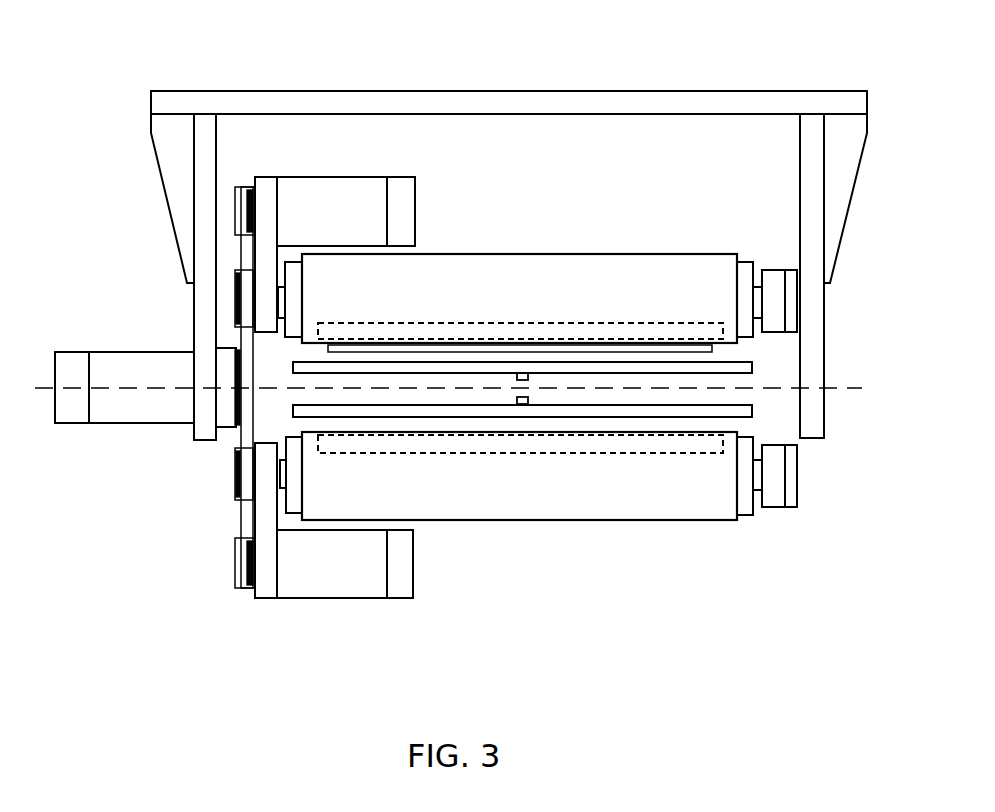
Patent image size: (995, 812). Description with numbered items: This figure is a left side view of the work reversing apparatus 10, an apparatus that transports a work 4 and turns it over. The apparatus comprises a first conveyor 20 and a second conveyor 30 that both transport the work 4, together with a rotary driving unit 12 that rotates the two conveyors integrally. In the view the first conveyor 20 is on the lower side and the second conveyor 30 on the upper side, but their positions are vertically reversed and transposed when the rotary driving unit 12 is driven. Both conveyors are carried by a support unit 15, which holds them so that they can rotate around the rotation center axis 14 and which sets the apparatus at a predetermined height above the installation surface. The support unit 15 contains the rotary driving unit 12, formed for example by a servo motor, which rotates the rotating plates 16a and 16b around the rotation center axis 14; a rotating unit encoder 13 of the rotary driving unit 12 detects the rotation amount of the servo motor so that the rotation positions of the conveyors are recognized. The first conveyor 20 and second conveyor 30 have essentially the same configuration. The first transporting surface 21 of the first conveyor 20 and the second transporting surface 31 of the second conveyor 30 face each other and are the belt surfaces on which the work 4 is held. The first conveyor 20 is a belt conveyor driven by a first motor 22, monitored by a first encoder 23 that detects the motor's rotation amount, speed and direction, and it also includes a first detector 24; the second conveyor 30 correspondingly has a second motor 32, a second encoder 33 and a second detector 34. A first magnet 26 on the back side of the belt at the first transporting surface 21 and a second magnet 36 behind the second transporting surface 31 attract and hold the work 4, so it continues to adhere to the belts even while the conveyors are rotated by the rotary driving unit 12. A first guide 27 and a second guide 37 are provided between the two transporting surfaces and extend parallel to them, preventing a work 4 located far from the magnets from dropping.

The work reversing apparatus 10 is at (268, 87).
The rotary driving unit 12 is at (131, 410).
The rotating unit encoder 13 is at (72, 408).
The rotation center axis 14 is at (116, 387).
The support unit 15 is at (630, 90).
The rotating plate 16a is at (266, 592).
The rotating plate 16b is at (266, 188).
The first conveyor 20 is at (722, 525).
The first transporting surface 21 is at (313, 427).
The first motor 22 is at (357, 586).
The first encoder 23 is at (403, 590).
The first detector 24 is at (522, 404).
The first magnet 26 is at (723, 446).
The first guide 27 is at (752, 412).
The second conveyor 30 is at (718, 237).
The second transporting surface 31 is at (303, 345).
The second motor 32 is at (343, 195).
The second encoder 33 is at (403, 195).
The second detector 34 is at (521, 374).
The second magnet 36 is at (723, 332).
The second guide 37 is at (752, 367).
The work 4 is at (655, 352).